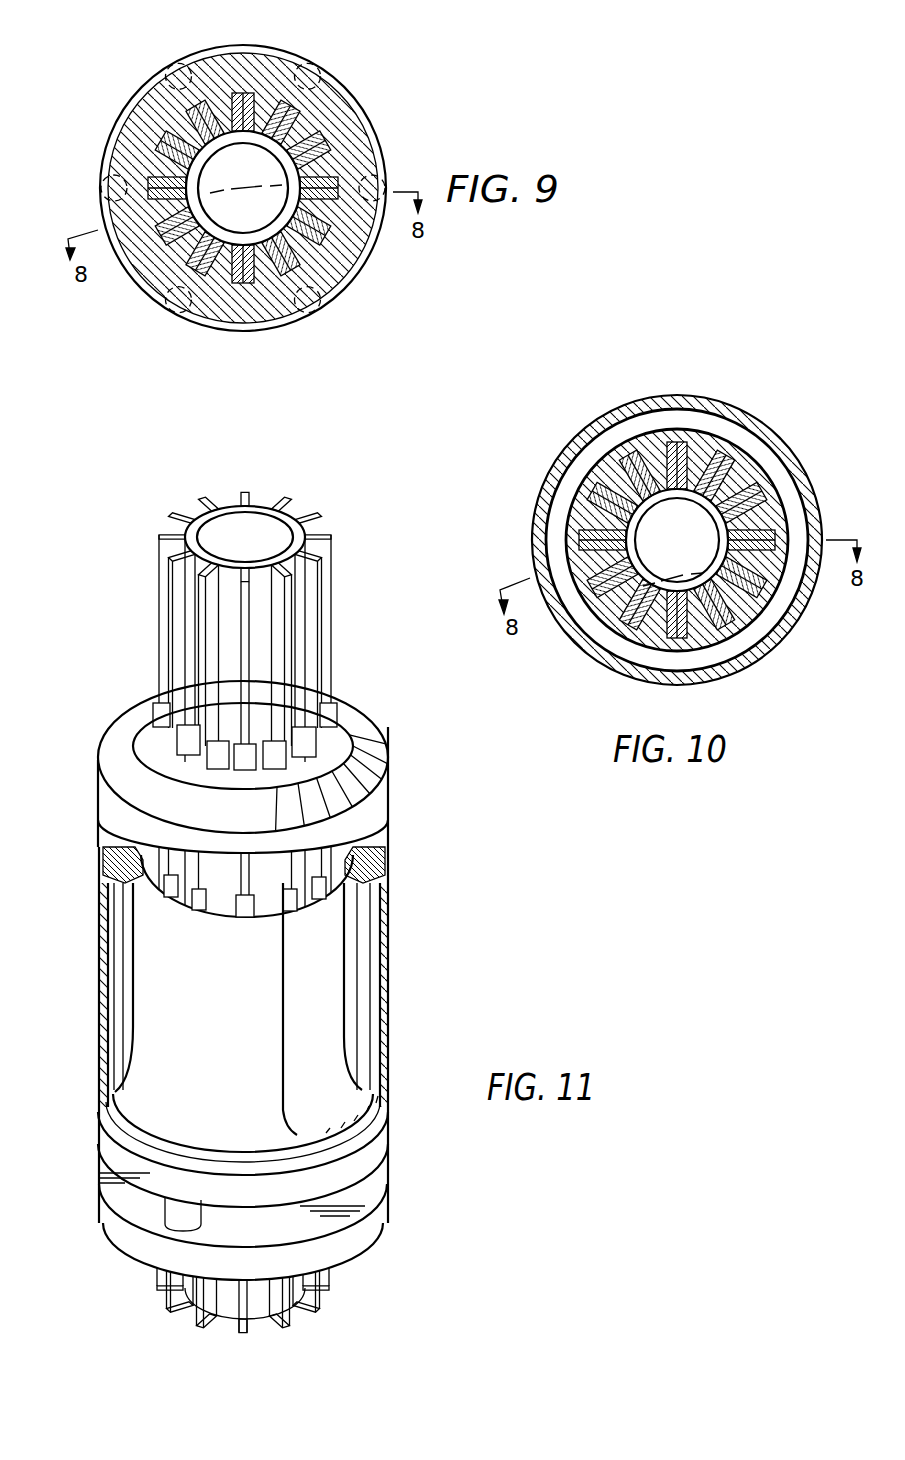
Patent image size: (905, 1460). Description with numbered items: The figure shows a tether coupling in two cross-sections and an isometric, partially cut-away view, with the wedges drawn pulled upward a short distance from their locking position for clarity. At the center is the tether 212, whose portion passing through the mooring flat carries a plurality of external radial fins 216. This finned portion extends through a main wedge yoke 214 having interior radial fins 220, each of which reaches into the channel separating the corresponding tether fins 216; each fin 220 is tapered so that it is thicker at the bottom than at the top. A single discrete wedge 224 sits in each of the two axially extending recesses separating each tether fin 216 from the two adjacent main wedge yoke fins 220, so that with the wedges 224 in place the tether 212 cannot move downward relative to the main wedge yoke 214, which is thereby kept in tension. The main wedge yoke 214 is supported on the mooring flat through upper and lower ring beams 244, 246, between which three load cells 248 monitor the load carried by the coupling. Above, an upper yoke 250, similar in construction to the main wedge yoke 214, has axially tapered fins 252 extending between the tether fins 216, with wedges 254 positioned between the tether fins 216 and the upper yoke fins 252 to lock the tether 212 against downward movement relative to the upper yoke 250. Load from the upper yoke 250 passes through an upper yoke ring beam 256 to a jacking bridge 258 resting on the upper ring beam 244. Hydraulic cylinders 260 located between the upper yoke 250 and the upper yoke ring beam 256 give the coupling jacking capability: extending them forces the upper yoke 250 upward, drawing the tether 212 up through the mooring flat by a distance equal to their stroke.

In FIG. 9, the tether 212 is at (283, 173).
In FIG. 10, the tether 212 is at (692, 592).
In FIG. 11, the tether 212 is at (256, 502).
In FIG. 10, the main wedge yoke 214 is at (699, 440).
In FIG. 11, the main wedge yoke 214 is at (228, 1006).
In FIG. 9, the tether fins 216 is at (240, 92).
In FIG. 10, the tether fins 216 is at (632, 452).
In FIG. 11, the tether fins 216 is at (323, 523).
In FIG. 10, the main wedge yoke fins 220 is at (752, 522).
In FIG. 10, the wedge 224 is at (702, 499).
In FIG. 11, the wedge 224 is at (270, 905).
In FIG. 11, the upper ring beam 244 is at (390, 1125).
In FIG. 11, the lower ring beam 246 is at (137, 1242).
In FIG. 11, the load cell 248 is at (130, 1210).
In FIG. 9, the upper yoke 250 is at (238, 322).
In FIG. 11, the upper yoke 250 is at (256, 822).
In FIG. 9, the upper yoke fins 252 is at (283, 148).
In FIG. 9, the upper yoke wedges 254 is at (300, 258).
In FIG. 11, the upper yoke wedges 254 is at (340, 745).
In FIG. 11, the upper yoke ring beam 256 is at (390, 858).
In FIG. 10, the jacking bridge 258 is at (770, 645).
In FIG. 11, the jacking bridge 258 is at (385, 933).
In FIG. 9, the hydraulic cylinders 260 is at (160, 65).
In FIG. 11, the hydraulic cylinders 260 is at (388, 808).